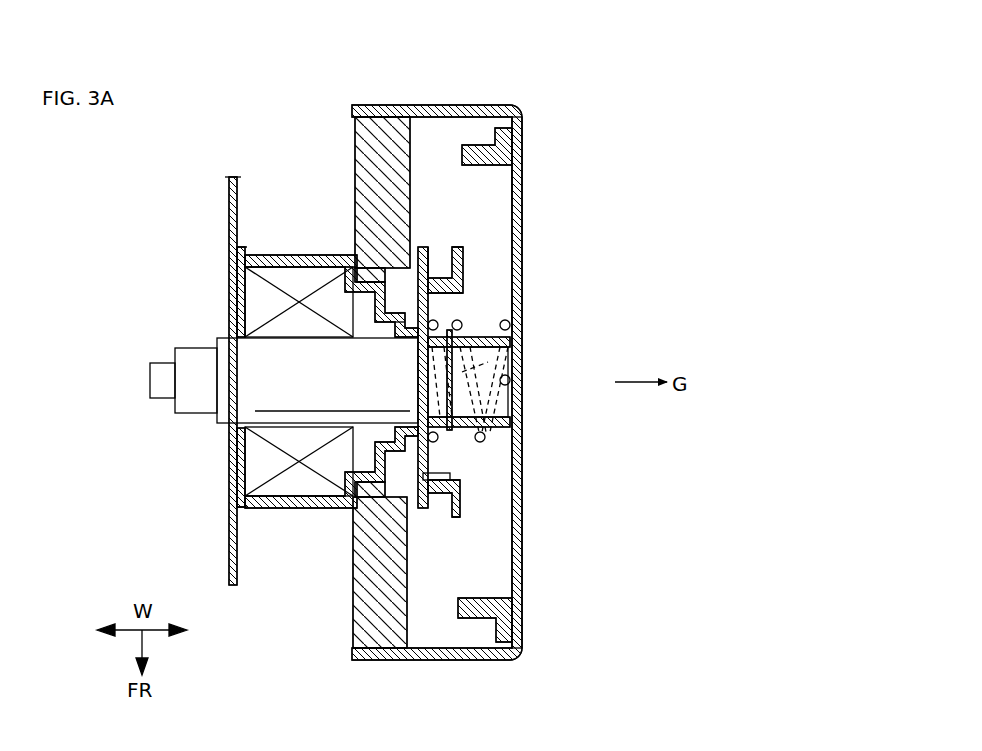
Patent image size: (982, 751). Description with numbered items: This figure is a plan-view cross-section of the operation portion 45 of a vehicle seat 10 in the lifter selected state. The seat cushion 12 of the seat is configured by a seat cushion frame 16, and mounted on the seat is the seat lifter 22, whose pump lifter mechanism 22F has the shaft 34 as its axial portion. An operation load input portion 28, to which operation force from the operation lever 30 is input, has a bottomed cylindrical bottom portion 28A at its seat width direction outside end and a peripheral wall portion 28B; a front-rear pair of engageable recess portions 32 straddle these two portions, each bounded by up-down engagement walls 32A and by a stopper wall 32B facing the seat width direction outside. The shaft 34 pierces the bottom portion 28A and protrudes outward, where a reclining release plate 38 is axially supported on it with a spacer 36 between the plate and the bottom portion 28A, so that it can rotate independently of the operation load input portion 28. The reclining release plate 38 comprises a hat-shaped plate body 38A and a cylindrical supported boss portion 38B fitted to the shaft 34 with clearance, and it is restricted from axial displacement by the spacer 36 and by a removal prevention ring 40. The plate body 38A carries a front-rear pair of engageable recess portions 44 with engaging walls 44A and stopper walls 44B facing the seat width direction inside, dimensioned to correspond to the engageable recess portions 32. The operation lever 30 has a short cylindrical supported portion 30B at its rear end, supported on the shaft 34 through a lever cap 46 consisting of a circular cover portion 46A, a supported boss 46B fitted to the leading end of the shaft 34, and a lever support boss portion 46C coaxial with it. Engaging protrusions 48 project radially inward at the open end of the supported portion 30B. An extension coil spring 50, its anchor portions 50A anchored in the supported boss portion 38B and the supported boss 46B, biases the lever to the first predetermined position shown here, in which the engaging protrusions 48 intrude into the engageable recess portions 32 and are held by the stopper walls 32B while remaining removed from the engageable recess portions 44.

The vehicle seat 10 is at (437, 382).
The seat cushion 12 is at (230, 208).
The seat cushion frame 16 is at (179, 381).
The seat lifter 22 is at (242, 377).
The pump lifter mechanism 22F is at (283, 347).
The operation load input portion 28 is at (270, 512).
The bottom portion 28A is at (406, 268).
The peripheral wall portion 28B is at (255, 511).
The operation lever 30 is at (514, 656).
The supported portion 30B is at (475, 620).
The engageable recess portions 32 is at (360, 348).
The engagement walls 32A is at (372, 270).
The stopper walls 32B is at (357, 290).
The shaft 34 is at (225, 397).
The spacer 36 is at (436, 477).
The reclining release plate 38 is at (462, 520).
The plate body 38A is at (472, 428).
The supported boss portion 38B is at (472, 337).
The removal prevention ring 40 is at (445, 408).
The engageable recess portions 44 is at (441, 270).
The engaging walls 44A is at (470, 250).
The stopper walls 44B is at (466, 284).
The operation portion 45 is at (516, 376).
The lever cap 46 is at (525, 168).
The cover portion 46A is at (521, 190).
The supported boss 46B is at (514, 314).
The lever support boss portion 46C is at (498, 135).
The engaging protrusions 48 is at (366, 149).
The extension coil spring 50 is at (511, 360).
The anchor portions 50A is at (512, 384).